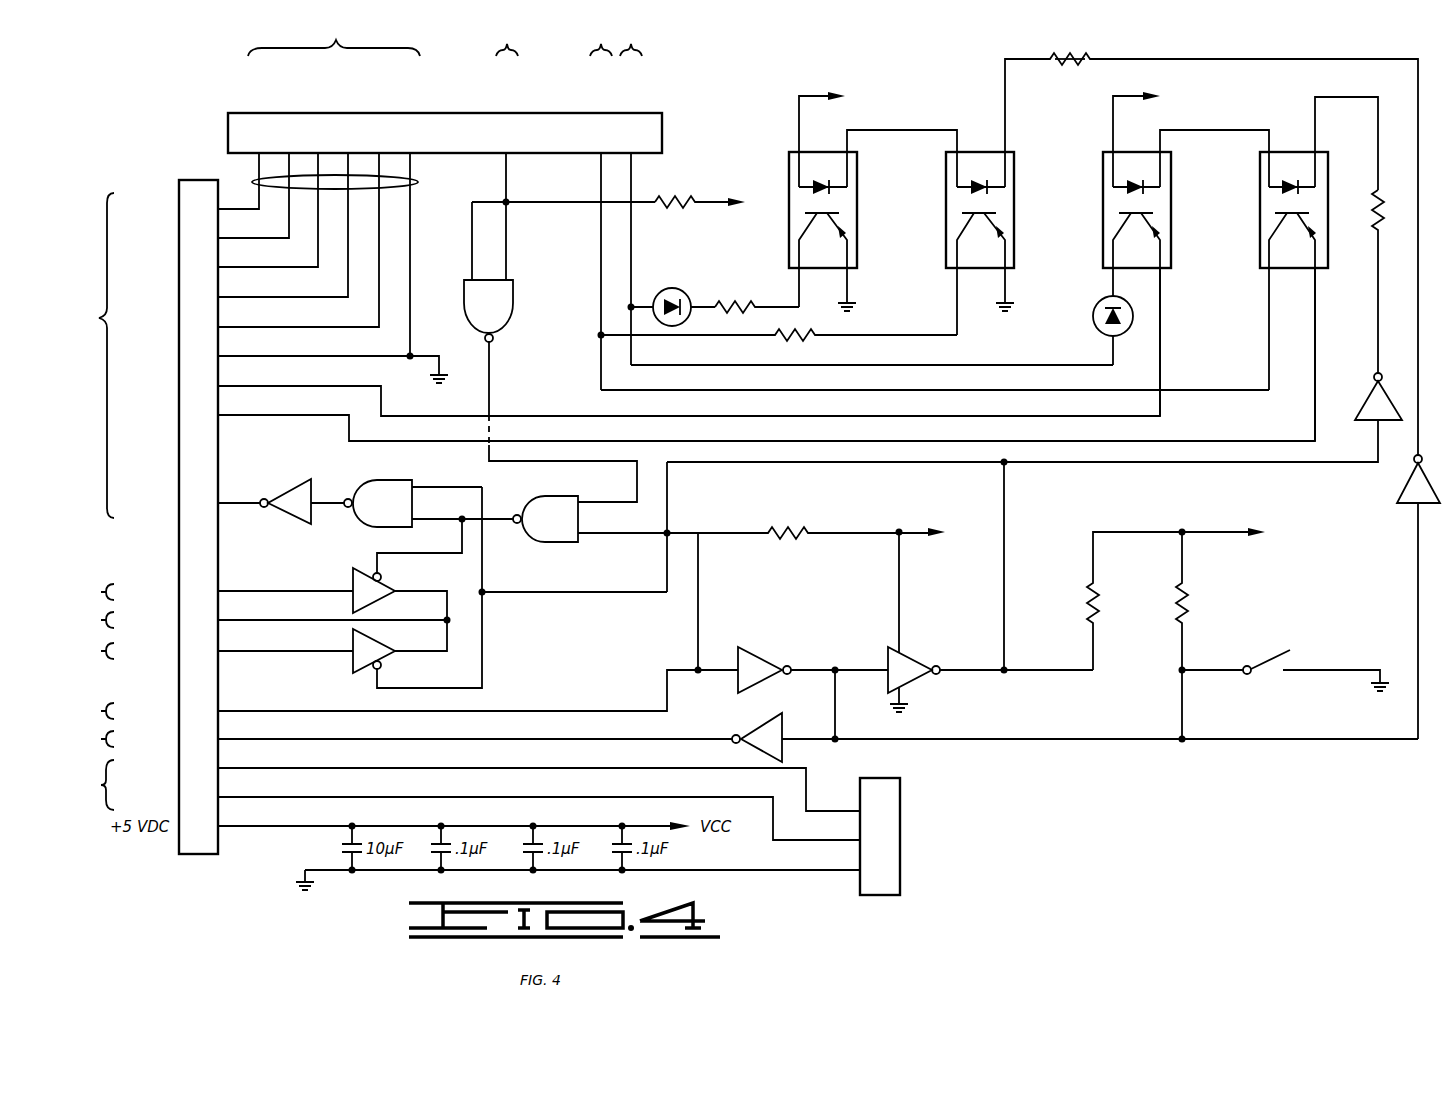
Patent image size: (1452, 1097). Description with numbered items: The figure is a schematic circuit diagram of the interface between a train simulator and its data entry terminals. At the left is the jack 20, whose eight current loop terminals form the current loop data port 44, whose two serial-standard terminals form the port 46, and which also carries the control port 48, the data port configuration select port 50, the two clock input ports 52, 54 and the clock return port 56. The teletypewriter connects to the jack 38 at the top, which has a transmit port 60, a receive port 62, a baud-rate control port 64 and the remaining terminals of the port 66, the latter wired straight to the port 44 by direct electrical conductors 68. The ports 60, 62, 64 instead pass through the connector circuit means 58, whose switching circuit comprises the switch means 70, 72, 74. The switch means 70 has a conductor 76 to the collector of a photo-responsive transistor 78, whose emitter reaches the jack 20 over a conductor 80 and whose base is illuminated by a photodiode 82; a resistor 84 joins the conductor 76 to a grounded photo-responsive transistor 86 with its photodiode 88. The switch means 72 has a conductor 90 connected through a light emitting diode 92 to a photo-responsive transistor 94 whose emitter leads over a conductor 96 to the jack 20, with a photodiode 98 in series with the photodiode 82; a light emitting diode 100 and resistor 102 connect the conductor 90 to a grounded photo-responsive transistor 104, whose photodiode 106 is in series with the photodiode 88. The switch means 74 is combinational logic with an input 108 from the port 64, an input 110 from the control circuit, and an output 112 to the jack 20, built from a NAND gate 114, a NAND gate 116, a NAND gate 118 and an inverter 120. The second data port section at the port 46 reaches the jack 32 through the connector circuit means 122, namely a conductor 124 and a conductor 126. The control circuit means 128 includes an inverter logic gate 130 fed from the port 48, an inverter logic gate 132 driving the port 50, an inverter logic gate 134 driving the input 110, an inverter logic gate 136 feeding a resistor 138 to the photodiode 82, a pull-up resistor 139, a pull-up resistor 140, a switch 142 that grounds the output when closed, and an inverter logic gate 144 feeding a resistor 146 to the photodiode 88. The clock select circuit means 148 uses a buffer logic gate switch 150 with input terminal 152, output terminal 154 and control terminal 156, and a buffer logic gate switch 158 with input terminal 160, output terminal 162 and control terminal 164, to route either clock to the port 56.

The jack 20 is at (196, 856).
The jack 32 is at (898, 780).
The jack 38 is at (664, 130).
The current loop data port 44 is at (96, 321).
The port 46 is at (109, 784).
The control port 48 is at (398, 695).
The data port configuration select port 50 is at (395, 739).
The port 52 is at (114, 592).
The port 54 is at (114, 651).
The port 56 is at (109, 621).
The connector circuit means 58 is at (774, 100).
The port 60 is at (631, 44).
The port 62 is at (601, 44).
The port 64 is at (507, 44).
The port 66 is at (336, 40).
The direct electrical conductors 68 is at (418, 182).
The switch means 70 is at (598, 390).
The switch means 72 is at (622, 365).
The switch means 74 is at (550, 548).
The conductor 76 is at (598, 238).
The photo-responsive transistor 78 is at (1278, 213).
The conductor 80 is at (1317, 324).
The photodiode 82 is at (1295, 178).
The resistor 84 is at (803, 347).
The photo-responsive transistor 86 is at (966, 213).
The photodiode 88 is at (988, 178).
The conductor 90 is at (633, 241).
The light emitting diode 92 is at (1092, 316).
The photo-responsive transistor 94 is at (1150, 213).
The conductor 96 is at (1163, 333).
The photodiode 98 is at (1144, 178).
The light emitting diode 100 is at (672, 287).
The resistor 102 is at (760, 292).
The photo-responsive transistor 104 is at (840, 213).
The photodiode 106 is at (825, 178).
The input 108 is at (509, 204).
The input 110 is at (580, 536).
The output 112 is at (258, 500).
The NAND gate 114 is at (514, 290).
The NAND gate 116 is at (538, 496).
The NAND gate 118 is at (388, 480).
The inverter 120 is at (290, 490).
The connector circuit means 122 is at (838, 775).
The conductor 124 is at (562, 772).
The conductor 126 is at (588, 800).
The control circuit means 128 is at (1370, 785).
The inverter logic gate 130 is at (760, 645).
The inverter logic gate 132 is at (768, 716).
The inverter logic gate 134 is at (878, 645).
The inverter logic gate 136 is at (1365, 425).
The resistor 138 is at (1388, 200).
The pull-up resistor 139 is at (1090, 610).
The pull-up resistor 140 is at (1188, 592).
The switch 142 is at (1272, 648).
The inverter logic gate 144 is at (1405, 508).
The resistor 146 is at (1080, 63).
The clock select circuit means 148 is at (258, 660).
The buffer logic gate switch 150 is at (368, 568).
The input terminal 152 is at (350, 585).
The output terminal 154 is at (395, 593).
The control terminal 156 is at (382, 576).
The buffer logic gate switch 158 is at (360, 680).
The input terminal 160 is at (350, 648).
The output terminal 162 is at (392, 646).
The control terminal 164 is at (382, 667).